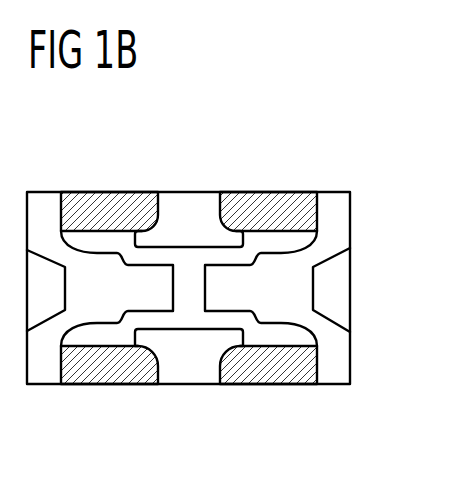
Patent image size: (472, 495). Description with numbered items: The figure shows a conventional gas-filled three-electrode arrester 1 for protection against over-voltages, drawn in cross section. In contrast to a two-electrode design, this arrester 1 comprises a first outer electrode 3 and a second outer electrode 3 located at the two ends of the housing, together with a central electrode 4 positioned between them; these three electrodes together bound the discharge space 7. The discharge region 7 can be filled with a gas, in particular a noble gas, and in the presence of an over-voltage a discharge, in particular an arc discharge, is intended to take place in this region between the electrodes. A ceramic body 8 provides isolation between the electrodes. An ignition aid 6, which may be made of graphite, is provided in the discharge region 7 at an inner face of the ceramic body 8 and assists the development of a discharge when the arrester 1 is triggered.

The arrester 1 is at (236, 288).
The outer electrode 3 is at (188, 233).
The central electrode 4 is at (226, 288).
The ignition aid 6 is at (117, 288).
The discharge region 7 is at (189, 202).
The ceramic body 8 is at (189, 408).